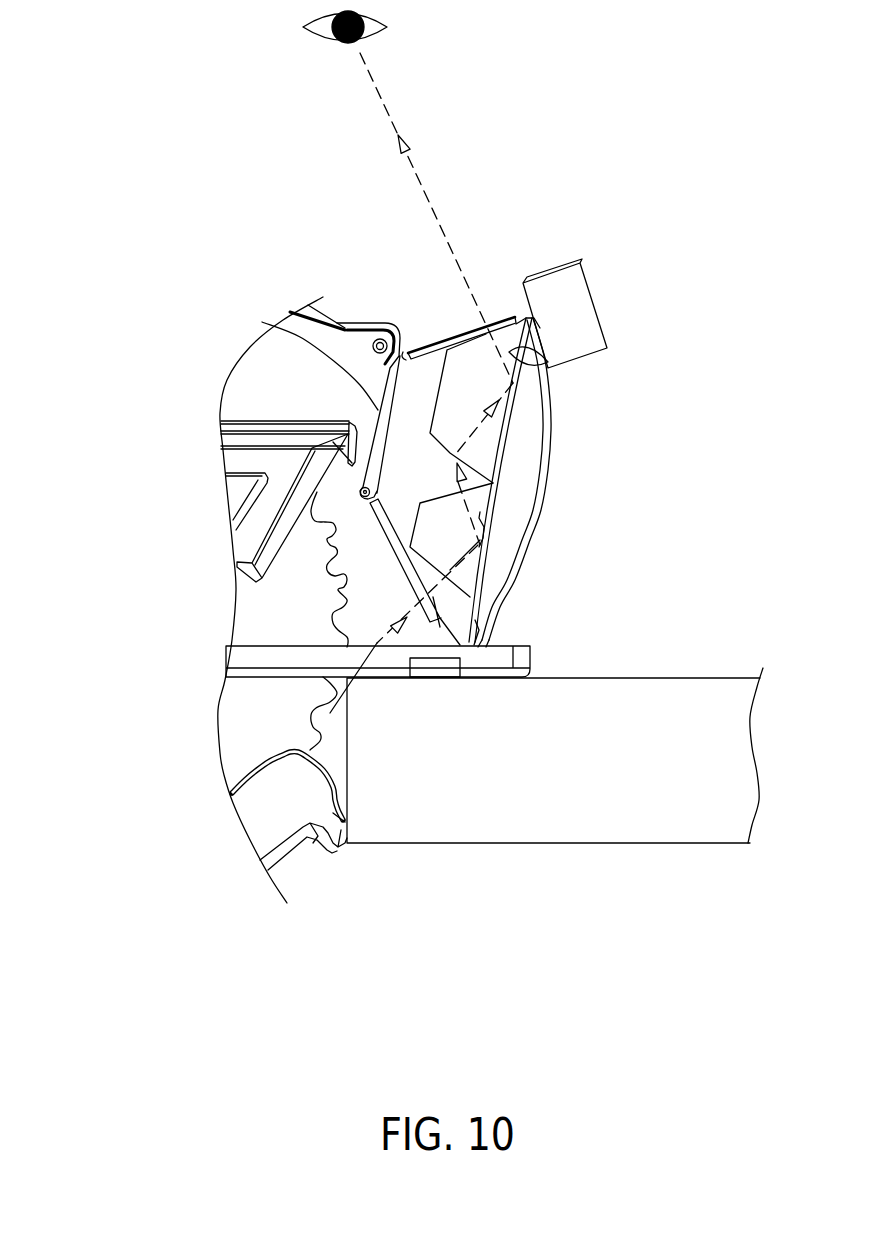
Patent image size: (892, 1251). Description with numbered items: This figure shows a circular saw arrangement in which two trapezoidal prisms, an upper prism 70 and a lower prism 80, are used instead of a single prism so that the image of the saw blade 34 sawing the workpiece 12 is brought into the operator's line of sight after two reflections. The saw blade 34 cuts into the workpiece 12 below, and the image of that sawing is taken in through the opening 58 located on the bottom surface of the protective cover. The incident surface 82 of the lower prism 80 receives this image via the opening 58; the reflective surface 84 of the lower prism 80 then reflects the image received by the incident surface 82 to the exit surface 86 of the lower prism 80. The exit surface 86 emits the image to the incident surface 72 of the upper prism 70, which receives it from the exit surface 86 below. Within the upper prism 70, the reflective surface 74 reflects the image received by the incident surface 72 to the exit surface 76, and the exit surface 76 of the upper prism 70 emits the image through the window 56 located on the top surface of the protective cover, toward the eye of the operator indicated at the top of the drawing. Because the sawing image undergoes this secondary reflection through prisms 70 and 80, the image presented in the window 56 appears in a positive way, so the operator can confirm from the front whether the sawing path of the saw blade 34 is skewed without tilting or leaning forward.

The workpiece 12 is at (727, 677).
The saw blade 34 is at (240, 722).
The window 56 is at (496, 317).
The opening 58 is at (440, 627).
The upper prism 70 is at (429, 347).
The incident surface of the upper prism 72 is at (457, 460).
The reflective surface of the upper prism 74 is at (548, 362).
The exit surface of the upper prism 76 is at (516, 316).
The lower prism 80 is at (400, 483).
The incident surface of the lower prism 82 is at (443, 585).
The reflective surface of the lower prism 84 is at (470, 505).
The exit surface of the lower prism 86 is at (490, 514).